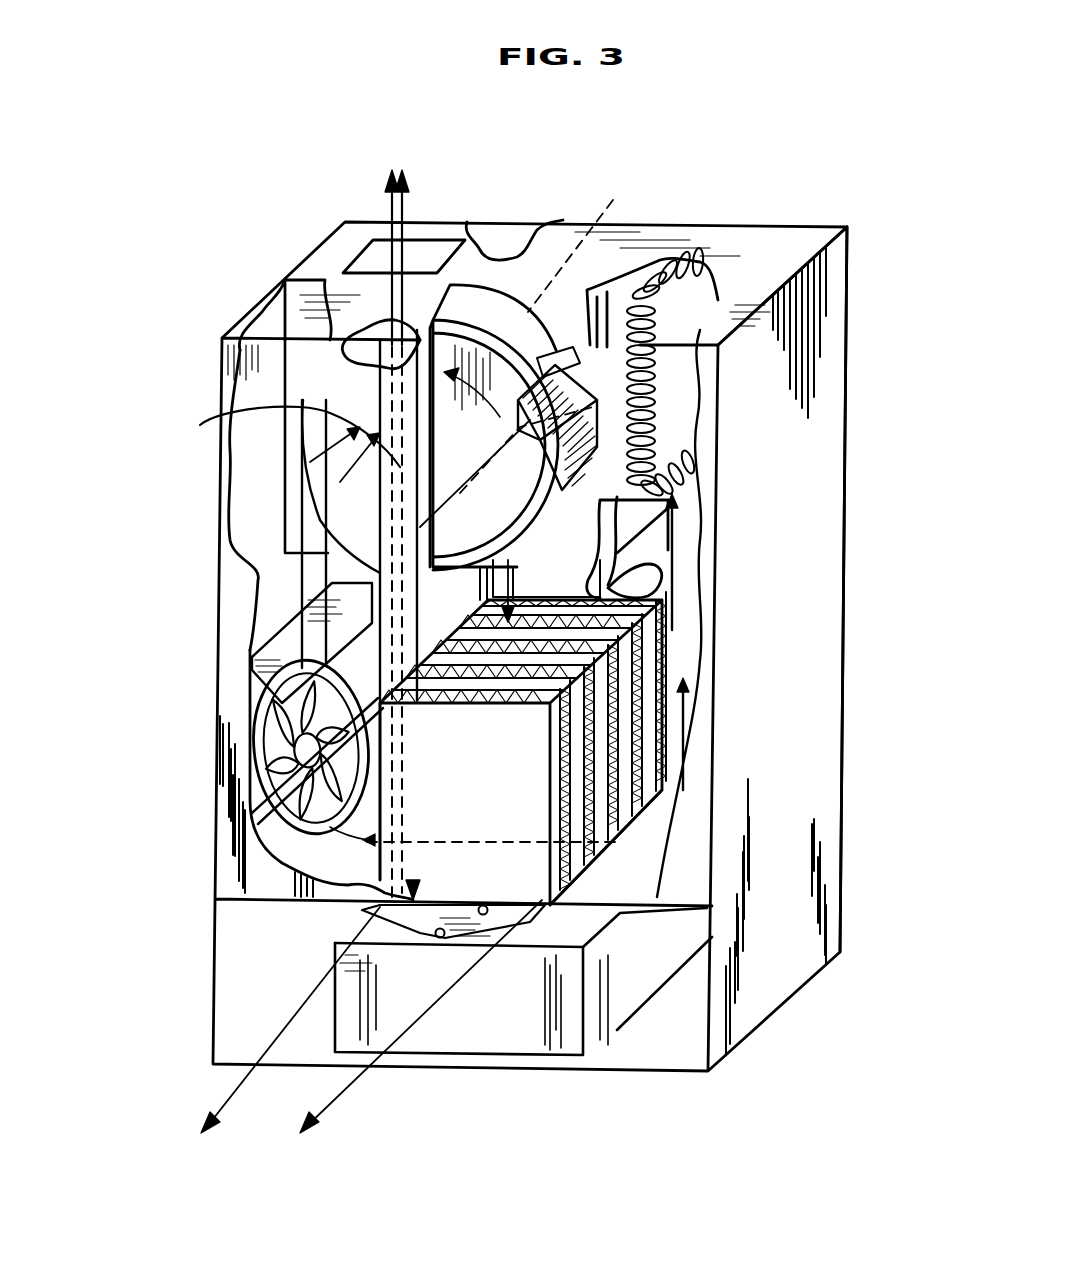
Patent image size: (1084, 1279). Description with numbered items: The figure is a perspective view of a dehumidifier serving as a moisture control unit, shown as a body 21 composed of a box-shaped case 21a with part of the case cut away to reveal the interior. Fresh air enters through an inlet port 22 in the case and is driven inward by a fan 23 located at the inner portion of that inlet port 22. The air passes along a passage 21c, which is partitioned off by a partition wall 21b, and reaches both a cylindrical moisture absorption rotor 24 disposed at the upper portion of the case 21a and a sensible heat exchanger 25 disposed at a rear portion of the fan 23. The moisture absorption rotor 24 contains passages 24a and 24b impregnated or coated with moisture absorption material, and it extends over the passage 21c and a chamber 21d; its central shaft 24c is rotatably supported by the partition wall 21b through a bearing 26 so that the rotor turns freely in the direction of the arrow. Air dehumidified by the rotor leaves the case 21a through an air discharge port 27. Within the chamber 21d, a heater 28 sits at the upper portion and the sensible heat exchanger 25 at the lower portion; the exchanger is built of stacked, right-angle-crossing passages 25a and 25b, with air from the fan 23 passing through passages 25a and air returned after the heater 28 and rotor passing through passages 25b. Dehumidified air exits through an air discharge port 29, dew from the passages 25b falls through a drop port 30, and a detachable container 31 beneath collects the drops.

The body of a dehumidifier 21 is at (849, 447).
The box-shaped case 21a is at (817, 764).
The partition wall 21b is at (376, 573).
The passage 21c is at (258, 493).
The chamber 21d is at (677, 820).
The inlet port 22 is at (285, 755).
The fan 23 is at (285, 695).
The moisture absorption rotor 24 is at (483, 313).
The passage 24a is at (530, 348).
The passage 24b is at (335, 397).
The shaft 24c is at (441, 453).
The sensible heat exchanger 25 is at (505, 858).
The passage 25a is at (620, 915).
The passage 25b is at (612, 610).
The bearing 26 is at (345, 408).
The air discharge port 27 is at (370, 263).
The heater 28 is at (663, 290).
The air discharge port 29 is at (362, 917).
The drop port 30 is at (523, 913).
The container 31 is at (445, 1025).